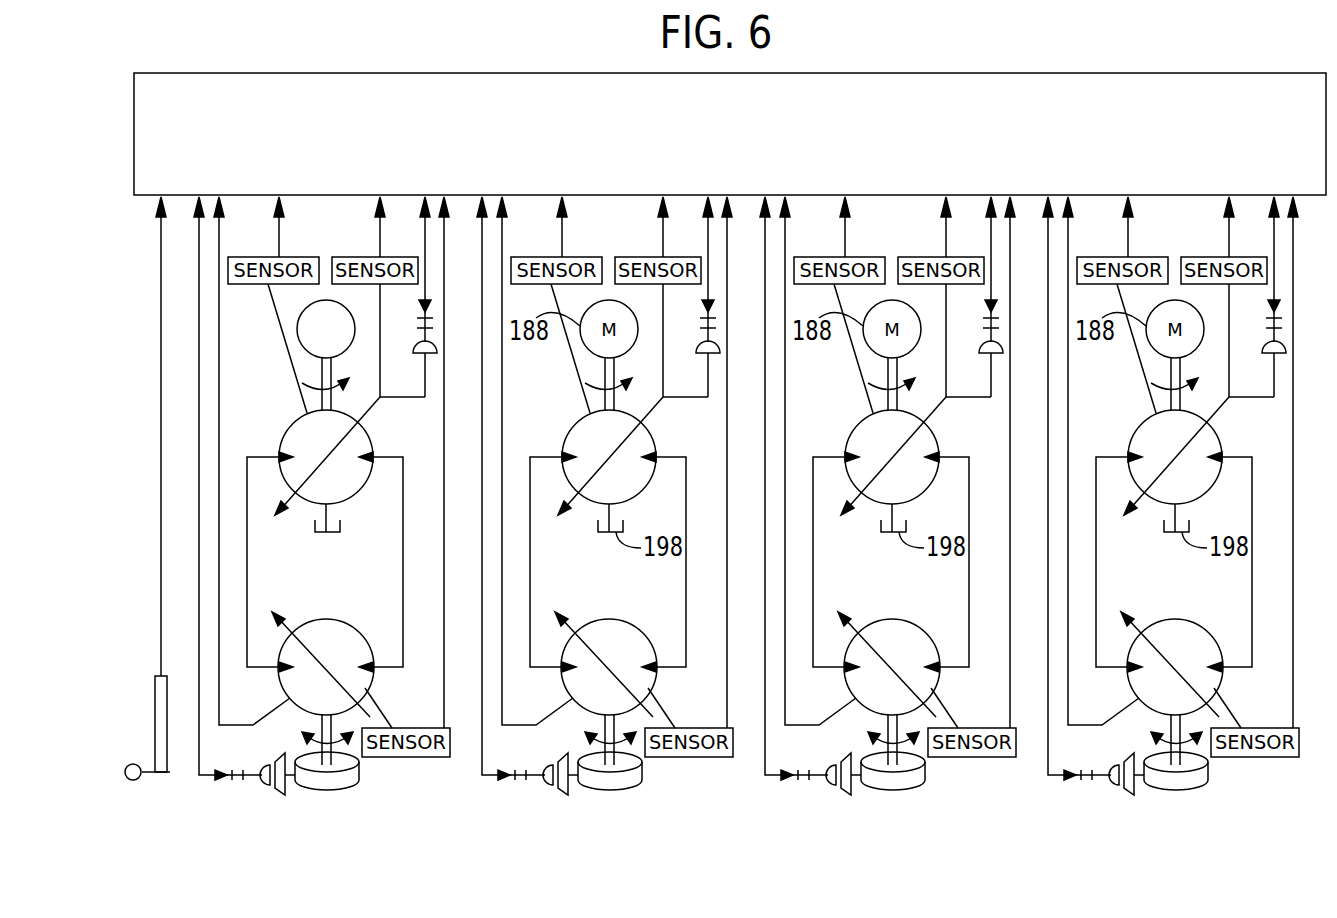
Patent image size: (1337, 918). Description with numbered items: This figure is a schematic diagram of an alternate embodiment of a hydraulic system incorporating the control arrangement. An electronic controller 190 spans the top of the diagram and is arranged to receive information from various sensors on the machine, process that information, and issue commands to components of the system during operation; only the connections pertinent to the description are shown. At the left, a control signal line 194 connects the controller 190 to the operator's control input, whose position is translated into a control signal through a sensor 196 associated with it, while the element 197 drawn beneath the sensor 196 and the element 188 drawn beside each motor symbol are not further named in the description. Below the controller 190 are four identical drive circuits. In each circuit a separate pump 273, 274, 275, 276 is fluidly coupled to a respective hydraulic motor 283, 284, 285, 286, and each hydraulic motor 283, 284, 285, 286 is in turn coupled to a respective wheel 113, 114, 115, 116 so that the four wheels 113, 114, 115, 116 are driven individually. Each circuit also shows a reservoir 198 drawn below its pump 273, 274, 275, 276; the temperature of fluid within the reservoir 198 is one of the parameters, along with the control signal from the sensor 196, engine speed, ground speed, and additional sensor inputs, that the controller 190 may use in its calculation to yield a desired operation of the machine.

The electronic controller 190 is at (948, 117).
The control signal line 194 is at (161, 435).
The sensor 196 is at (155, 710).
The control knob 197 is at (131, 780).
The electric motor 188 is at (297, 326).
The reservoir 198 is at (333, 532).
The pump 273 is at (370, 428).
The pump 274 is at (623, 532).
The pump 275 is at (906, 532).
The pump 276 is at (1189, 532).
The hydraulic motor 283 is at (333, 620).
The hydraulic motor 284 is at (619, 651).
The hydraulic motor 285 is at (902, 651).
The hydraulic motor 286 is at (1185, 651).
The wheel 113 is at (345, 782).
The wheel 114 is at (653, 765).
The wheel 115 is at (936, 765).
The wheel 116 is at (1219, 765).